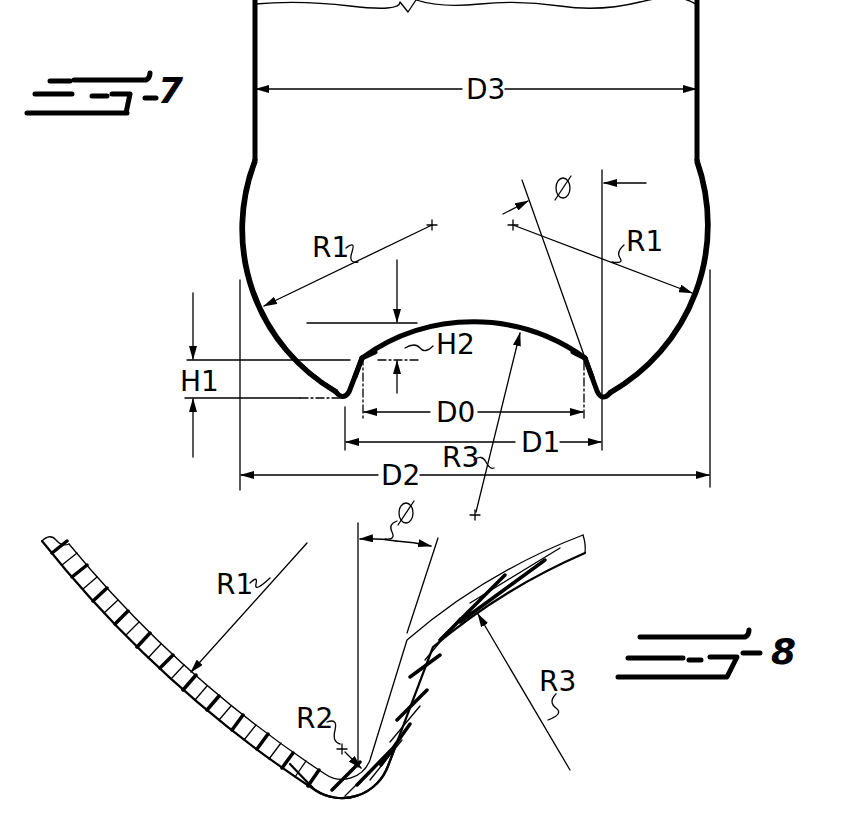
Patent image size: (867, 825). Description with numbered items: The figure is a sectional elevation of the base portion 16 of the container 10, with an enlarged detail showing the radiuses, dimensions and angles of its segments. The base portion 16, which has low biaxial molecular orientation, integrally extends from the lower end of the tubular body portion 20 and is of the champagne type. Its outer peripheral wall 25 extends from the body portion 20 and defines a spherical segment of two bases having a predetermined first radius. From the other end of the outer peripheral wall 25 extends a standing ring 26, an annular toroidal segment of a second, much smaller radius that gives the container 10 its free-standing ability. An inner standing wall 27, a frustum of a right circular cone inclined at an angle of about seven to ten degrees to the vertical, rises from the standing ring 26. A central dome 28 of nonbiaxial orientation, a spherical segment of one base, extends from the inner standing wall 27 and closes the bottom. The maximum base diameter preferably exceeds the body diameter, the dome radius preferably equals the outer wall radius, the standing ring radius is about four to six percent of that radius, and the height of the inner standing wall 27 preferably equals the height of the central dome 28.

In FIG. 7, the container 10 is at (252, 35).
In FIG. 7, the base portion 16 is at (691, 323).
In FIG. 8, the base portion 16 is at (182, 719).
In FIG. 7, the tubular body portion 20 is at (699, 62).
In FIG. 7, the outer peripheral wall 25 is at (262, 321).
In FIG. 8, the outer peripheral wall 25 is at (163, 684).
In FIG. 7, the standing ring 26 is at (342, 401).
In FIG. 8, the standing ring 26 is at (355, 806).
In FIG. 7, the inner standing wall 27 is at (360, 360).
In FIG. 7, the central dome 28 is at (466, 323).